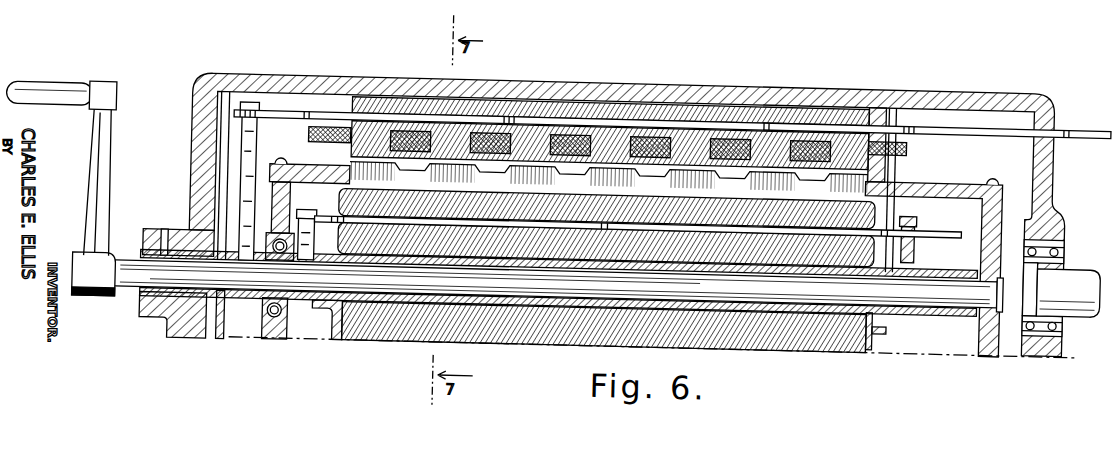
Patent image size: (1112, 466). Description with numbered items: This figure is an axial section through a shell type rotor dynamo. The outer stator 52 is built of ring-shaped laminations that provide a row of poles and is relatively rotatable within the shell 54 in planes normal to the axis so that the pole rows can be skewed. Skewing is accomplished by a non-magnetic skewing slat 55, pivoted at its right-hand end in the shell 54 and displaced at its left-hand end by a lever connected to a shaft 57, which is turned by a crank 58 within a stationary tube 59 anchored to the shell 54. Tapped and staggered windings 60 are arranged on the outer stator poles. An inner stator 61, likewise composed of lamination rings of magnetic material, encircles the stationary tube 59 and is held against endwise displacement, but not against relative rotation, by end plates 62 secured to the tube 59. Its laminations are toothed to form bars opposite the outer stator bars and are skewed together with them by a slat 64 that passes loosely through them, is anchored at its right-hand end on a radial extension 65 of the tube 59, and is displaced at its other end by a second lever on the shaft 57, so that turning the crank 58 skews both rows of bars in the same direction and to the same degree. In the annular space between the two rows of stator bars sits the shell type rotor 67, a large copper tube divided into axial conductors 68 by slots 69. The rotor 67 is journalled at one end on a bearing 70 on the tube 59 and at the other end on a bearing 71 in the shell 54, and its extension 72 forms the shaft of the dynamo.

The outer stator 52 is at (560, 101).
The shell 54 is at (637, 82).
The non-magnetic skewing slat 55 is at (1075, 113).
The shaft 57 is at (125, 302).
The crank 58 is at (27, 102).
The stationary tube 59 is at (165, 329).
The tapped and staggered windings 60 is at (345, 134).
The inner stator 61 is at (333, 327).
The end plates 62 is at (870, 326).
The slat 64 is at (925, 217).
The radial extension 65 is at (915, 237).
The shell type rotor 67 is at (870, 168).
The axial conductors 68 is at (712, 100).
The slots 69 is at (487, 175).
The bearing 70 is at (262, 326).
The bearing 71 is at (1073, 250).
The extension 72 is at (1068, 300).